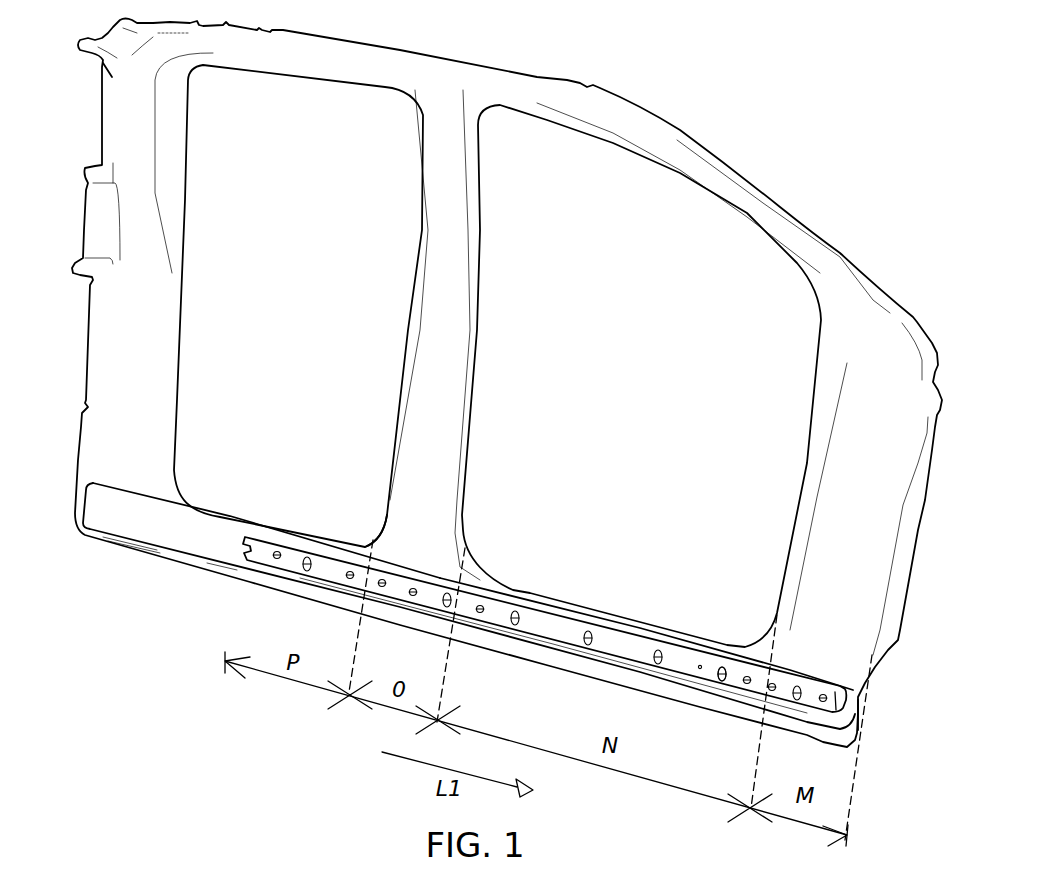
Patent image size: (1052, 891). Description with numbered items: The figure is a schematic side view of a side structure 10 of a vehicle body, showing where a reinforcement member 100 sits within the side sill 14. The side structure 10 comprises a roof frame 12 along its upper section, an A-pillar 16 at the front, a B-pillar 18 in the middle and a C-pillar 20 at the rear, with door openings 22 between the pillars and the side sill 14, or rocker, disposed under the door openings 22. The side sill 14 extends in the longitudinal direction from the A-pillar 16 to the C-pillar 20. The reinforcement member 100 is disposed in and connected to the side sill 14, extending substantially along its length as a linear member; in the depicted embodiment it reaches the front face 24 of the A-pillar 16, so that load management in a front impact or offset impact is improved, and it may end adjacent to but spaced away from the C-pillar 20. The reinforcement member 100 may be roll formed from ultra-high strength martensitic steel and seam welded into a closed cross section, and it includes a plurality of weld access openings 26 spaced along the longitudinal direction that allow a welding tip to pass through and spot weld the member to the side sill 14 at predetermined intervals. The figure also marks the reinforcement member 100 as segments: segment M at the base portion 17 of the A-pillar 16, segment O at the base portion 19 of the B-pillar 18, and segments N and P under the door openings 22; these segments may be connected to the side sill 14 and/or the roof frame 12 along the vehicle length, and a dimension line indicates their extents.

The side structure 10 is at (900, 117).
The roof frame 12 is at (537, 85).
The side sill 14 is at (200, 540).
The A-pillar 16 is at (838, 338).
The base portion of the A-pillar 17 is at (823, 679).
The B-pillar 18 is at (423, 205).
The base portion of the B-pillar 19 is at (418, 573).
The C-pillar 20 is at (103, 288).
The door openings 22 is at (529, 383).
The front face of the A-pillar 24 is at (857, 690).
The weld access openings 26 is at (720, 678).
The reinforcement member 100 is at (498, 615).